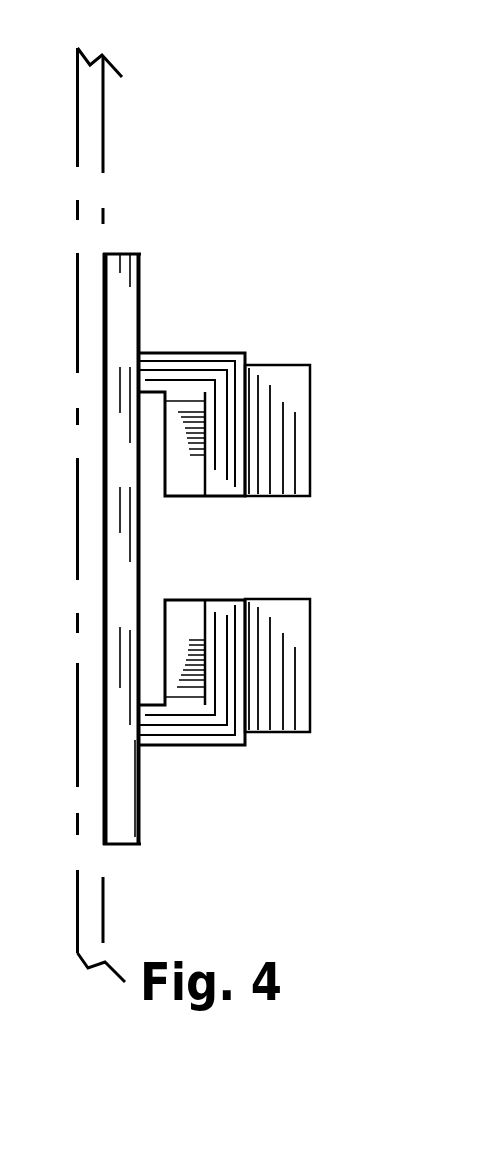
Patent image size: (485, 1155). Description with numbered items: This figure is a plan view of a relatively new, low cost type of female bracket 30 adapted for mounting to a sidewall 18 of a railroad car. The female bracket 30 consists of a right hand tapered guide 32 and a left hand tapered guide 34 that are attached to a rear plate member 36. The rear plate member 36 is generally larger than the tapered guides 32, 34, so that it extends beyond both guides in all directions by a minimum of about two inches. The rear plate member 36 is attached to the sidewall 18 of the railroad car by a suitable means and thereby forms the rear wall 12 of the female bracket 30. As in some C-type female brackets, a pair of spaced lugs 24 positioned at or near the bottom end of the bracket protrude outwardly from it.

The rear wall 12 is at (138, 563).
The sidewall 18 is at (103, 112).
The spaced lugs 24 is at (312, 415).
The female bracket 30 is at (244, 740).
The right hand tapered guide 32 is at (218, 352).
The left hand tapered guide 34 is at (222, 747).
The rear plate member 36 is at (120, 250).